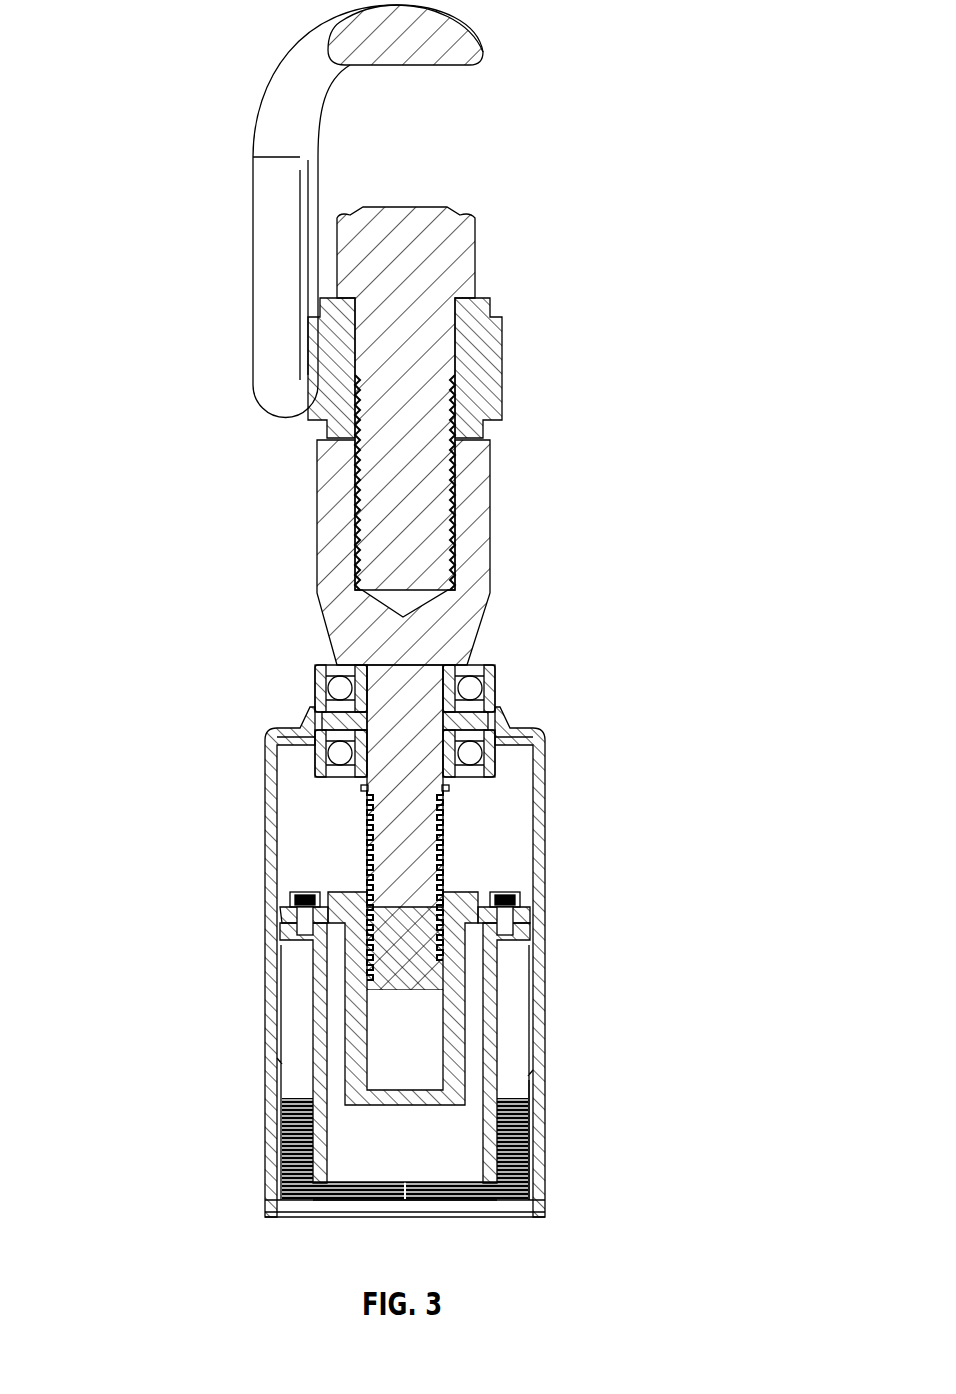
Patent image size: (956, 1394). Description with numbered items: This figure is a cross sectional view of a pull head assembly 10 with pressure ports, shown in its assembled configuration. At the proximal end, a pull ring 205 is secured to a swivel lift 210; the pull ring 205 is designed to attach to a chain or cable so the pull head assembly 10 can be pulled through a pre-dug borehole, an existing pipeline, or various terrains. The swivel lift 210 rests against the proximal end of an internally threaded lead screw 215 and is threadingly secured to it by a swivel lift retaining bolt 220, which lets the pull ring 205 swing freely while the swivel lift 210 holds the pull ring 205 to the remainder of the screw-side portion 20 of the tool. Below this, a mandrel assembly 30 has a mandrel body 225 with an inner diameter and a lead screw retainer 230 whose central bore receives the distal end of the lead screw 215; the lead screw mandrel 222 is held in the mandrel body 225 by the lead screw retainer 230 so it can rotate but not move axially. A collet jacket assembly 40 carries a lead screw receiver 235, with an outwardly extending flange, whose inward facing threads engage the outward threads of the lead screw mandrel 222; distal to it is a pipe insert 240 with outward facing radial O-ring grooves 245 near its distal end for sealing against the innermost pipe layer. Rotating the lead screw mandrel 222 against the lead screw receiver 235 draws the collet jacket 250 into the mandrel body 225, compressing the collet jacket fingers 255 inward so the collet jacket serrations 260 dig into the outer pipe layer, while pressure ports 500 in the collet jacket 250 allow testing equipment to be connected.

The pull head assembly 10 is at (160, 5).
The handle assembly 20 is at (235, 5).
The mandrel assembly 30 is at (250, 665).
The collet jacket assembly 40 is at (637, 890).
The pull ring 205 is at (330, 105).
The swivel lift 210 is at (487, 360).
The lead screw 215 is at (475, 515).
The swivel lift retaining bolt 220 is at (460, 233).
The lead screw mandrel 222 is at (417, 848).
The mandrel body 225 is at (532, 835).
The lead screw retainer 230 is at (497, 710).
The lead screw receiver 235 is at (470, 900).
The pipe insert 240 is at (490, 950).
The O-ring grooves 245 is at (493, 1147).
The collet jacket 250 is at (533, 1093).
The collet jacket fingers 255 is at (493, 1187).
The collet jacket serrations 260 is at (505, 1200).
The pressure ports 500 is at (505, 905).